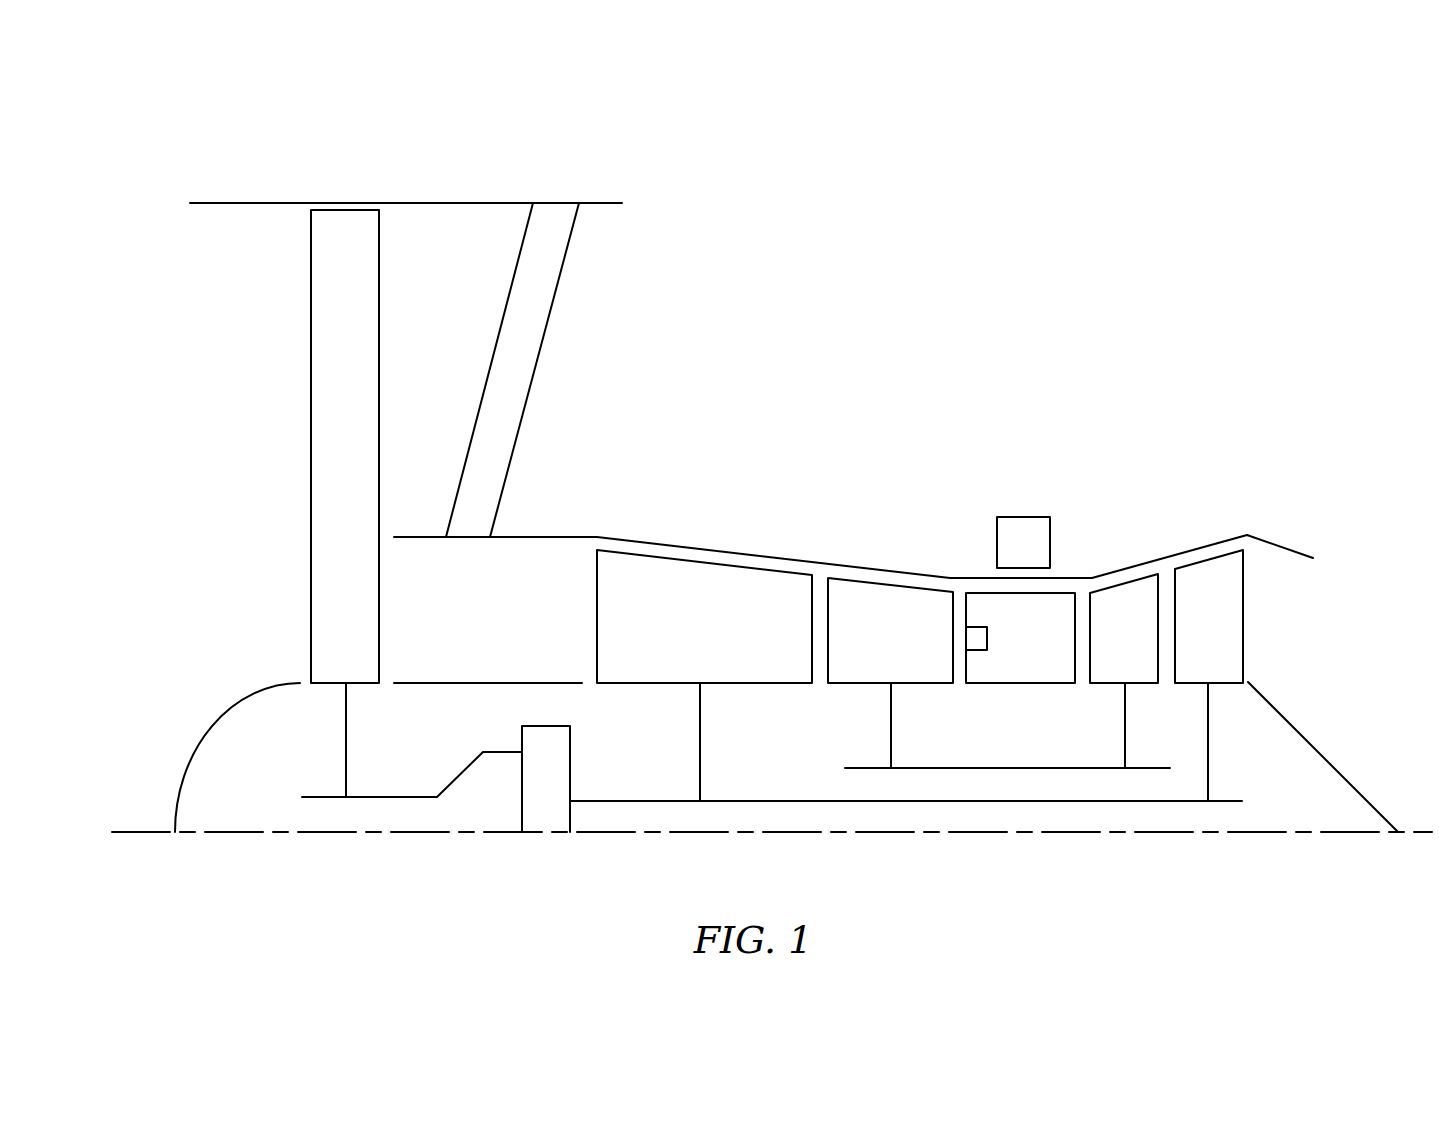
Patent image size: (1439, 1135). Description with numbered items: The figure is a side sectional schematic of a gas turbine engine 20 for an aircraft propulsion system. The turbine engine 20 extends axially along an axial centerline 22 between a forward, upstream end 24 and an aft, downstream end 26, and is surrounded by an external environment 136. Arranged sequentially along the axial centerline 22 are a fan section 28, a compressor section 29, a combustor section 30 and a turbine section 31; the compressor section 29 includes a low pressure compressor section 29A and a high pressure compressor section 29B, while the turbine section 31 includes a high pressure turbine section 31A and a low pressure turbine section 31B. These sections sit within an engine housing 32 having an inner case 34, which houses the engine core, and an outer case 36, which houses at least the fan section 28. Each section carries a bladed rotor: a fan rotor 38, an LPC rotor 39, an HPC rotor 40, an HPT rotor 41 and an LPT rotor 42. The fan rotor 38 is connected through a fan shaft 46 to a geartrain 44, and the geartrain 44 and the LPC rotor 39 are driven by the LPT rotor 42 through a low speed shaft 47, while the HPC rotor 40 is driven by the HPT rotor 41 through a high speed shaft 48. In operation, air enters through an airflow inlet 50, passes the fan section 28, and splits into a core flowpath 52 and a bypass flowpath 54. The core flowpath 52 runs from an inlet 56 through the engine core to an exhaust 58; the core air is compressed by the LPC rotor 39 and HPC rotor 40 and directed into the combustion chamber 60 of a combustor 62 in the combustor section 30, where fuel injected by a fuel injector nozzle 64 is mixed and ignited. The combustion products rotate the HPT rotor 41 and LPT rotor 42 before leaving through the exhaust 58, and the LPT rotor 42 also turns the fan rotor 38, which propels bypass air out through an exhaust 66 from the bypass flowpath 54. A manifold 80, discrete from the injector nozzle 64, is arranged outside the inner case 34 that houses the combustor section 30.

The gas turbine engine 20 is at (130, 110).
The axial centerline 22 is at (125, 838).
The forward, upstream end 24 is at (190, 203).
The aft, downstream end 26 is at (1400, 830).
The fan section 28 is at (218, 179).
The compressor section 29 is at (775, 510).
The low pressure compressor (LPC) section 29A is at (812, 474).
The high pressure compressor (HPC) section 29B is at (890, 553).
The combustor section 30 is at (1028, 553).
The turbine section 31 is at (1166, 510).
The high pressure turbine (HPT) section 31A is at (1090, 474).
The low pressure turbine (LPT) section 31B is at (1209, 553).
The engine housing 32 is at (735, 192).
The inner case 34 is at (556, 500).
The outer case 36 is at (513, 190).
The fan rotor 38 is at (346, 740).
The LPC rotor 39 is at (700, 756).
The HPC rotor 40 is at (891, 715).
The HPT rotor 41 is at (1125, 715).
The LPT rotor 42 is at (1208, 742).
The geartrain 44 is at (532, 791).
The fan shaft 46 is at (391, 798).
The low speed shaft 47 is at (1152, 802).
The high speed shaft 48 is at (1020, 767).
The airflow inlet 50 is at (173, 396).
The core flowpath 52 is at (455, 631).
The bypass flowpath 54 is at (426, 357).
The inlet 56 is at (391, 614).
The exhaust 58 is at (1318, 640).
The combustion chamber 60 is at (1015, 651).
The combustor 62 is at (1060, 593).
The fuel injector nozzle 64 is at (982, 627).
The exhaust 66 is at (622, 283).
The manifold 80 is at (1010, 557).
The environment 136 is at (1045, 174).